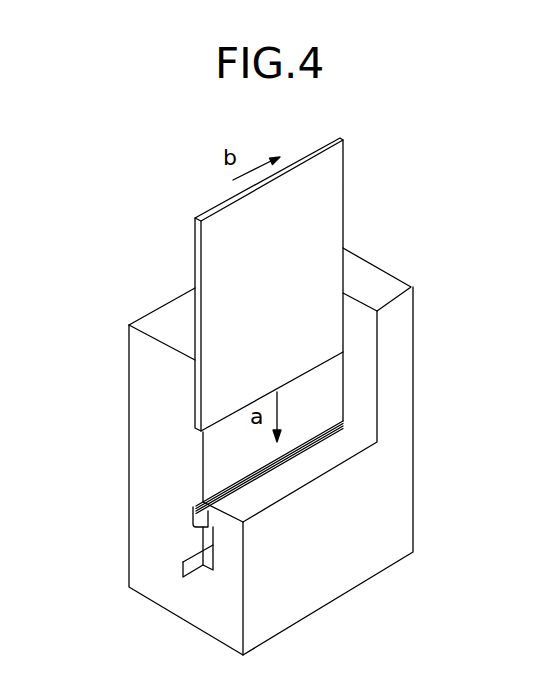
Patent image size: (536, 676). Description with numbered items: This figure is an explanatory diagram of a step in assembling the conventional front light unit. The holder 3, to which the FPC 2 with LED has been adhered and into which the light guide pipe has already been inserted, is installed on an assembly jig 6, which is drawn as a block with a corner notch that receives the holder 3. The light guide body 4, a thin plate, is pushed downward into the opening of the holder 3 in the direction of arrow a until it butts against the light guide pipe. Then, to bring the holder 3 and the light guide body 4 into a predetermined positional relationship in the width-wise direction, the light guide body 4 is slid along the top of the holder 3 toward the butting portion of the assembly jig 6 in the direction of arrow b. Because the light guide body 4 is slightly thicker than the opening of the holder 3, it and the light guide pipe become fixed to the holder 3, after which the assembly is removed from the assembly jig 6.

The FPC with LED 2 is at (183, 570).
The holder 3 is at (196, 515).
The light guide body 4 is at (343, 182).
The assembly jig 6 is at (407, 352).